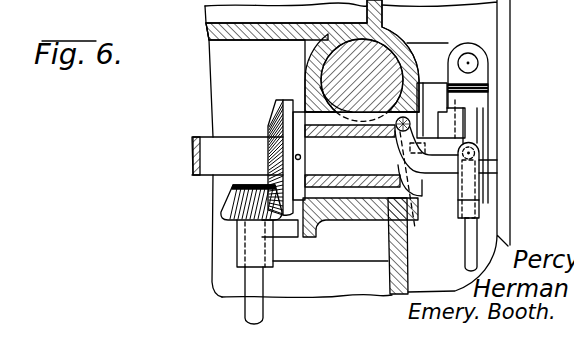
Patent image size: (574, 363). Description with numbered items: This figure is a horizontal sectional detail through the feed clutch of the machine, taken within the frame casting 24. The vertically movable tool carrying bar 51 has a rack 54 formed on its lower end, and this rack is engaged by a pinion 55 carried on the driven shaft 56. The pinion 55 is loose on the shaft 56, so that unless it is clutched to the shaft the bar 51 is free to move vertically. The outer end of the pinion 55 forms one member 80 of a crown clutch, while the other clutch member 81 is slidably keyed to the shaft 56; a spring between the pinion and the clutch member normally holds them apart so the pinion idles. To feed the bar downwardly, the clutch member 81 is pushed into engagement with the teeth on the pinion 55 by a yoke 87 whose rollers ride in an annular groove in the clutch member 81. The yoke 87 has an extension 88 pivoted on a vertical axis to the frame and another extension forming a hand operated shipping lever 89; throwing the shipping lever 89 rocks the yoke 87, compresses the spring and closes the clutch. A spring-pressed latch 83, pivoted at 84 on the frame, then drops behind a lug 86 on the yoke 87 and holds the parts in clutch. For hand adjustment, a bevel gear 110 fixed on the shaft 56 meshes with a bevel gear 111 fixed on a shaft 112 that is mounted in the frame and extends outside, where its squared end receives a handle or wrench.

The frame casting 24 is at (407, 42).
The tool carrying bar 51 is at (387, 50).
The rack 54 is at (348, 92).
The pinion 55 is at (362, 190).
The shaft 56 is at (203, 160).
The clutch member 80 is at (431, 110).
The clutch member 81 is at (450, 130).
The latch 83 is at (492, 164).
The pivot 84 is at (397, 138).
The lug 86 is at (481, 186).
The yoke 87 is at (480, 208).
The extension 88 is at (481, 77).
The shipping lever 89 is at (467, 254).
The bevel gear 110 is at (270, 118).
The bevel gear 111 is at (222, 201).
The shaft 112 is at (252, 309).